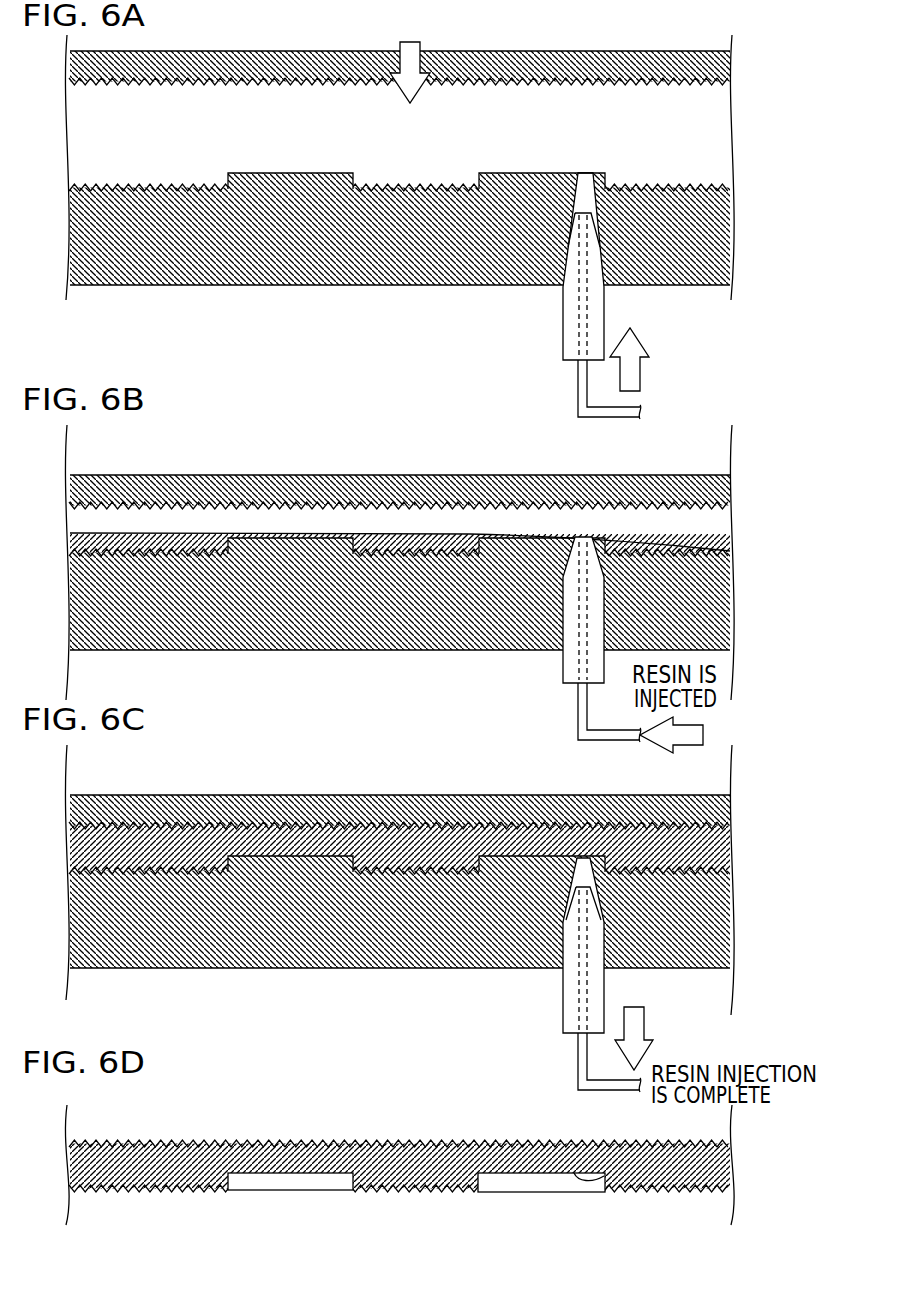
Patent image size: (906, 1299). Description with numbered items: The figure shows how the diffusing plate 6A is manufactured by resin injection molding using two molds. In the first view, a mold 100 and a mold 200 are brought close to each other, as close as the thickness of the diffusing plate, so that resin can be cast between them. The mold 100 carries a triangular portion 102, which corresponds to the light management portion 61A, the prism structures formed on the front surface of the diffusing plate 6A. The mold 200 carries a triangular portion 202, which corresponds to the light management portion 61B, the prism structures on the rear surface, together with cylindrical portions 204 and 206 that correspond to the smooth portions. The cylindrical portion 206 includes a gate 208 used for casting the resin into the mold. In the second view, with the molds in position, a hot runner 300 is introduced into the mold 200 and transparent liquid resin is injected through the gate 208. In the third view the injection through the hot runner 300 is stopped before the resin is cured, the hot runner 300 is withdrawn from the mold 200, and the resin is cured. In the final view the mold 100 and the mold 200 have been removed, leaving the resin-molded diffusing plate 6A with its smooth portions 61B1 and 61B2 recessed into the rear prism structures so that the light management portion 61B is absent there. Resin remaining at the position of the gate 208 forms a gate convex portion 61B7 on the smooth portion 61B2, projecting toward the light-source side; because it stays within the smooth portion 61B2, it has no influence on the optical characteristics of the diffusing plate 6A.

In FIG. 6A, the mold 100 is at (488, 79).
In FIG. 6B, the mold 100 is at (462, 475).
In FIG. 6A, the triangular portion 102 is at (203, 86).
In FIG. 6A, the mold 200 is at (259, 287).
In FIG. 6B, the mold 200 is at (259, 650).
In FIG. 6C, the mold 200 is at (259, 968).
In FIG. 6A, the triangular portion 202 is at (103, 185).
In FIG. 6A, the cylindrical portion 204 is at (277, 173).
In FIG. 6A, the cylindrical portion 206 is at (515, 173).
In FIG. 6A, the gate 208 is at (583, 173).
In FIG. 6A, the hot runner 300 is at (570, 318).
In FIG. 6B, the hot runner 300 is at (568, 664).
In FIG. 6C, the hot runner 300 is at (568, 1014).
In FIG. 6D, the diffusing plate 6A is at (290, 1133).
In FIG. 6D, the light management portion 61A is at (101, 1143).
In FIG. 6D, the light management portion 61B is at (101, 1190).
In FIG. 6D, the smooth portion 61B1 is at (265, 1180).
In FIG. 6D, the smooth portion 61B2 is at (515, 1180).
In FIG. 6D, the gate convex portion 61B7 is at (586, 1181).